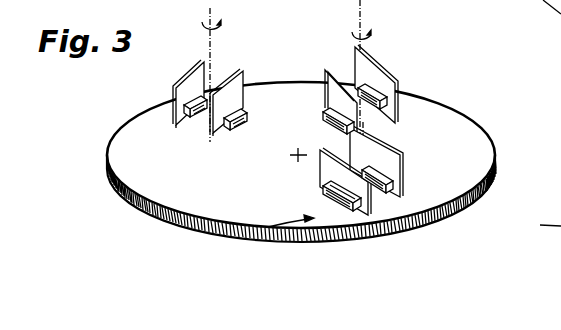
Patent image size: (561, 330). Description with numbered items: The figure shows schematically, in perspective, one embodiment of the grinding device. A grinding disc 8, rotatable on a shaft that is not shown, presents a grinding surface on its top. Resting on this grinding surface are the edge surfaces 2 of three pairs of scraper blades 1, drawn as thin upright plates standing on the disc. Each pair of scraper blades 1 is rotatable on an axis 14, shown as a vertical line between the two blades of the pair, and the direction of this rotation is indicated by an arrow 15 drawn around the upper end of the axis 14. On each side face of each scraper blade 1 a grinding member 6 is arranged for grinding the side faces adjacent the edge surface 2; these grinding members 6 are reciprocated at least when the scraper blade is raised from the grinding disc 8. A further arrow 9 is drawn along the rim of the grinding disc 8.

The scraper blade 1 is at (182, 75).
The edge surface 2 is at (175, 126).
The grinding member 6 is at (192, 116).
The grinding disc 8 is at (211, 210).
The rotation direction arrow 9 is at (282, 232).
The axis 14 is at (208, 45).
The arrow 15 is at (224, 30).